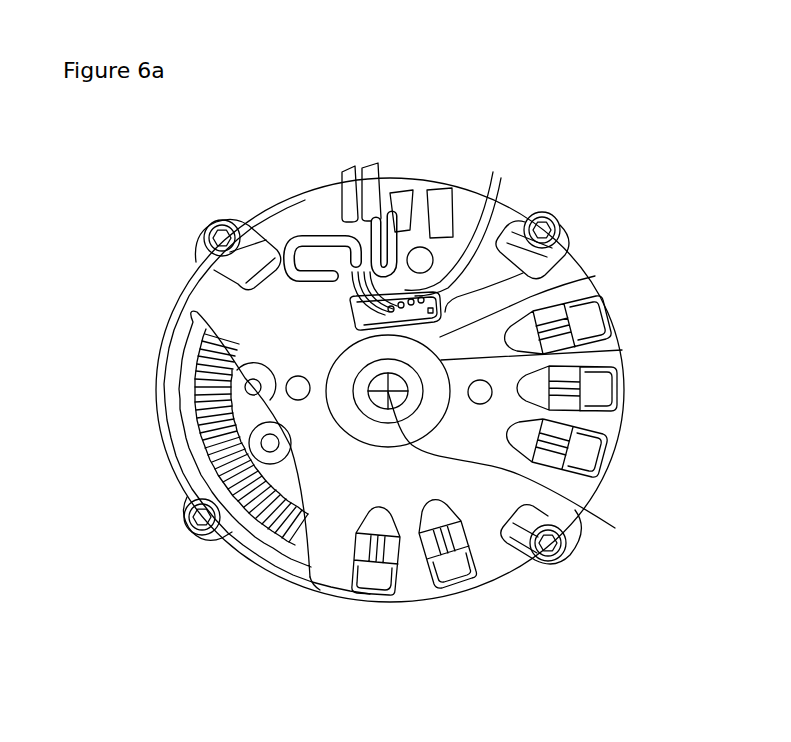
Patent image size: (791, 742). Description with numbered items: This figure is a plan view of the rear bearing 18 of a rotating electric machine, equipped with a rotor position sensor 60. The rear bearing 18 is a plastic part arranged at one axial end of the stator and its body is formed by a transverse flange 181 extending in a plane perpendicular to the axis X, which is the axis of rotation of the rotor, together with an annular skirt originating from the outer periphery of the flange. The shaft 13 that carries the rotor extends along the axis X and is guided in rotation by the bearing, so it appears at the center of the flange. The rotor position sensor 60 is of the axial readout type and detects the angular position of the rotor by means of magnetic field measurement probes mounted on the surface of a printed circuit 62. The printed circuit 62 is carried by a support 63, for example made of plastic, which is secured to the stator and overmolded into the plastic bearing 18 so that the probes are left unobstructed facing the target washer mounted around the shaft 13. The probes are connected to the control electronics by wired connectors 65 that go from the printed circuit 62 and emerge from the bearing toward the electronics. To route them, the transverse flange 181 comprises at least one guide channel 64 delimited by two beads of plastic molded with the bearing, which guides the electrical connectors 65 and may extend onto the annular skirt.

The shaft 13 is at (410, 378).
The rear bearing 18 is at (324, 598).
The transverse flange 181 is at (457, 483).
The rotor position sensor 60 is at (337, 322).
The printed circuit 62 is at (527, 270).
The support 63 is at (575, 283).
The guide channel 64 is at (378, 172).
The wired connector 65 is at (472, 215).
The axis X is at (514, 472).